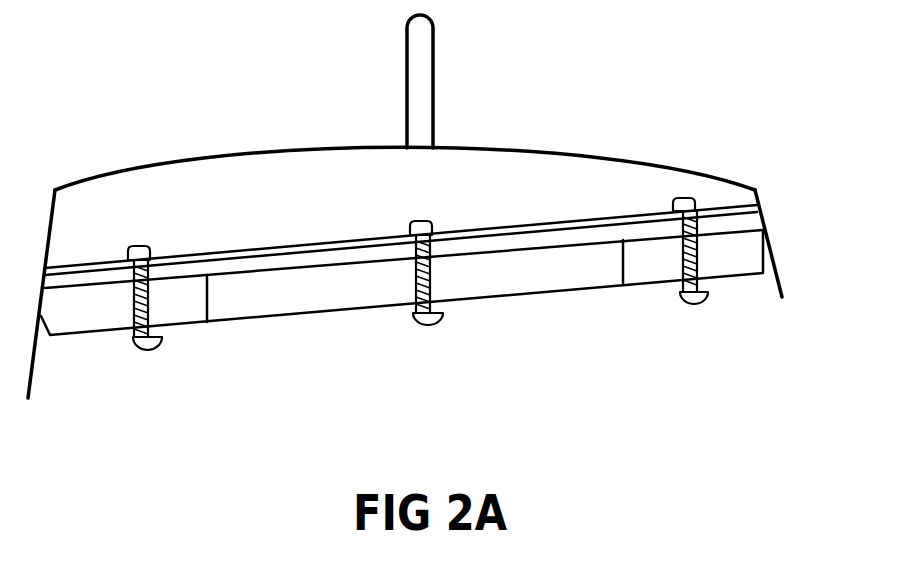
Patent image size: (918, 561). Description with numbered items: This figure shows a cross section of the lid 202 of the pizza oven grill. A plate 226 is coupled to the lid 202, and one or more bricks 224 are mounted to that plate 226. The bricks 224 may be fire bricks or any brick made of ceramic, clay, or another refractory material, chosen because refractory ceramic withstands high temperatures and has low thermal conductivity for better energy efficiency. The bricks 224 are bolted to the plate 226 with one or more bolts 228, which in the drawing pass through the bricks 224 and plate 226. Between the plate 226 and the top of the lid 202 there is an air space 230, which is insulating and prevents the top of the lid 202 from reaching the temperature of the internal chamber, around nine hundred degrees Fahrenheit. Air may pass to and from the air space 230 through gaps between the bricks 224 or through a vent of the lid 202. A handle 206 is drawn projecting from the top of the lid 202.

The lid 202 is at (765, 220).
The handle attachment post 206 is at (433, 60).
The brick 224 is at (268, 307).
The plate 226 is at (343, 240).
The bolt 228 is at (690, 303).
The air space 230 is at (253, 226).